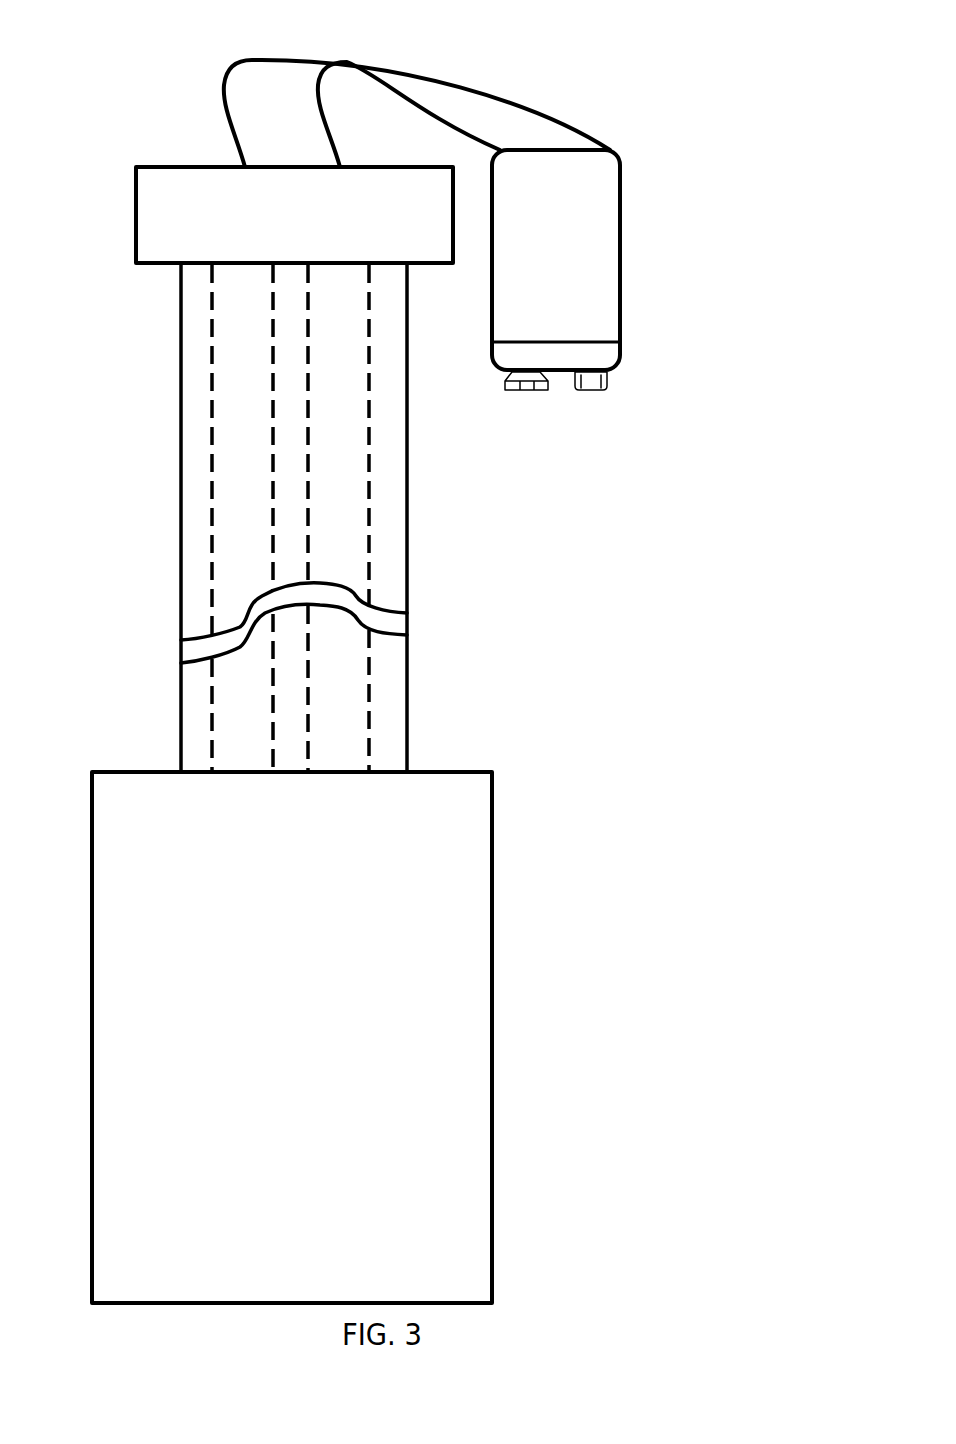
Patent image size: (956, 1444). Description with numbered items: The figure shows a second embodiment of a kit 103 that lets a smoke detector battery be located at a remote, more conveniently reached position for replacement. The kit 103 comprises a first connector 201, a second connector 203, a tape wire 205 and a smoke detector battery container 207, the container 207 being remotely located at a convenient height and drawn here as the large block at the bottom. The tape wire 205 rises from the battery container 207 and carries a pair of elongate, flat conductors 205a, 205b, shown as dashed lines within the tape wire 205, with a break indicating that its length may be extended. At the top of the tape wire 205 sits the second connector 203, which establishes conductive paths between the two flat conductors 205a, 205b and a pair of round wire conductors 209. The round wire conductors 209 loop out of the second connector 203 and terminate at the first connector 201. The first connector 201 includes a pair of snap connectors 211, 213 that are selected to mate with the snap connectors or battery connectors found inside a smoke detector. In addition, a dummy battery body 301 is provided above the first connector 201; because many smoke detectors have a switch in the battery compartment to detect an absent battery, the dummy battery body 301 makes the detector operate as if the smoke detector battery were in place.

The kit 103 is at (703, 569).
The first connector 201 is at (595, 355).
The second connector 203 is at (162, 203).
The tape wire 205 is at (181, 383).
The flat conductor 205a is at (228, 440).
The flat conductor 205b is at (347, 535).
The smoke detector battery container 207 is at (437, 832).
The round wire conductors 209 is at (333, 58).
The snap connector 211 is at (610, 380).
The snap connector 213 is at (530, 385).
The dummy battery body 301 is at (612, 190).